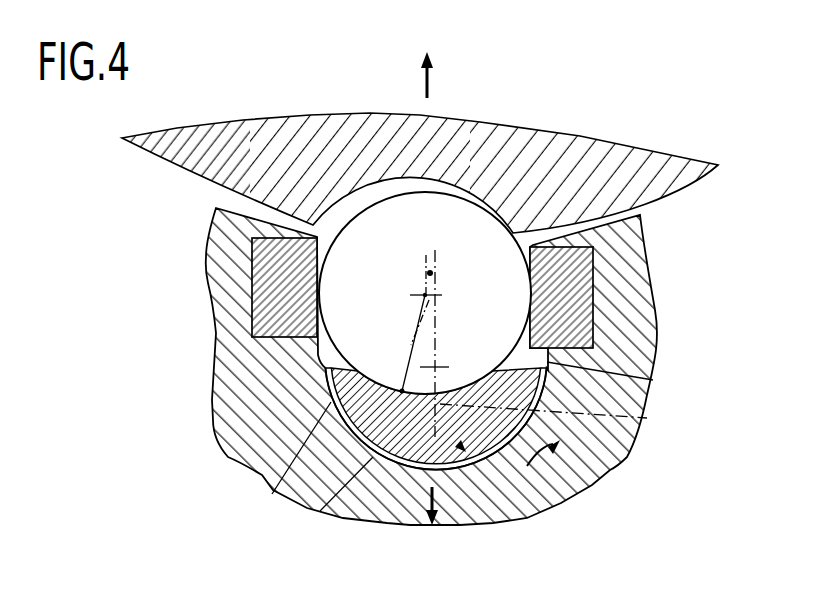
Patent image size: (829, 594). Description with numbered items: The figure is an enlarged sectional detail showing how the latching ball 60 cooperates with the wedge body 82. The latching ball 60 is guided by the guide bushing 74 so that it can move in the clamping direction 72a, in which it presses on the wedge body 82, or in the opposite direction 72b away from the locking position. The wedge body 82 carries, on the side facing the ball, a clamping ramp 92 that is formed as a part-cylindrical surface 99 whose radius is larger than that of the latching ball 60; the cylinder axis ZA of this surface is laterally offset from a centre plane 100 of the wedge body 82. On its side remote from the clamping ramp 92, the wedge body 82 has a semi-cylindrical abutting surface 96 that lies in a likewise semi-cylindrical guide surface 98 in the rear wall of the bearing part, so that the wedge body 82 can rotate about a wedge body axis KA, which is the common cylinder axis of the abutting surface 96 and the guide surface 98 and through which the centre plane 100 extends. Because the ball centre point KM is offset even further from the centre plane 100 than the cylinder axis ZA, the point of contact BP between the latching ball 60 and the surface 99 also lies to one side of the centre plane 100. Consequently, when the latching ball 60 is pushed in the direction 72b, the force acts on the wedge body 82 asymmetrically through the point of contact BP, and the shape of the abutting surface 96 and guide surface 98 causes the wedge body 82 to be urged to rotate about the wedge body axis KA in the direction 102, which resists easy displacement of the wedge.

The latching ball 60 is at (383, 213).
The clamping direction 72a is at (424, 78).
The direction away from the locking position 72b is at (427, 498).
The guide bushing 74 is at (580, 300).
The wedge body 82 is at (488, 447).
The clamping ramp 92 is at (272, 494).
The semi-cylindrical abutting surface 96 is at (320, 511).
The guide surface 98 is at (511, 455).
The part-cylindrical surface 99 is at (653, 380).
The centre plane 100 is at (647, 418).
The direction of rotation 102 is at (553, 460).
The cylinder axis ZA is at (428, 272).
The ball centre point KM is at (422, 295).
The wedge body axis KA is at (437, 366).
The point of contact BP is at (401, 389).